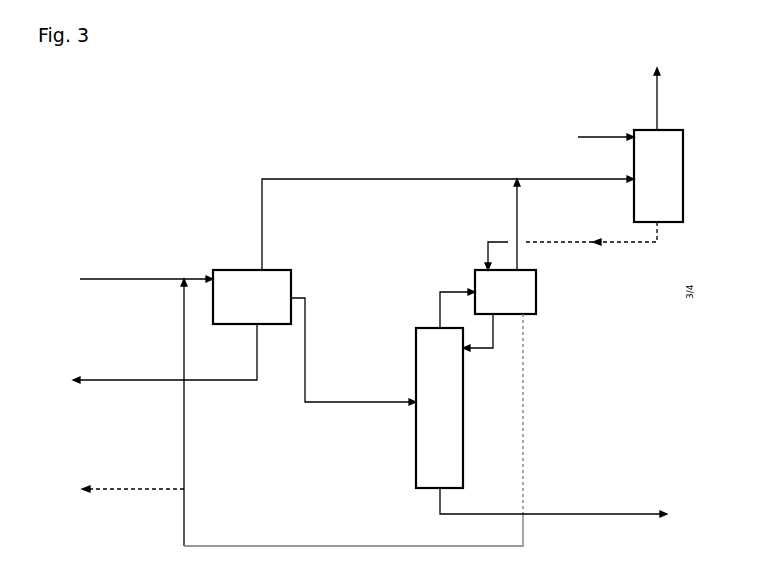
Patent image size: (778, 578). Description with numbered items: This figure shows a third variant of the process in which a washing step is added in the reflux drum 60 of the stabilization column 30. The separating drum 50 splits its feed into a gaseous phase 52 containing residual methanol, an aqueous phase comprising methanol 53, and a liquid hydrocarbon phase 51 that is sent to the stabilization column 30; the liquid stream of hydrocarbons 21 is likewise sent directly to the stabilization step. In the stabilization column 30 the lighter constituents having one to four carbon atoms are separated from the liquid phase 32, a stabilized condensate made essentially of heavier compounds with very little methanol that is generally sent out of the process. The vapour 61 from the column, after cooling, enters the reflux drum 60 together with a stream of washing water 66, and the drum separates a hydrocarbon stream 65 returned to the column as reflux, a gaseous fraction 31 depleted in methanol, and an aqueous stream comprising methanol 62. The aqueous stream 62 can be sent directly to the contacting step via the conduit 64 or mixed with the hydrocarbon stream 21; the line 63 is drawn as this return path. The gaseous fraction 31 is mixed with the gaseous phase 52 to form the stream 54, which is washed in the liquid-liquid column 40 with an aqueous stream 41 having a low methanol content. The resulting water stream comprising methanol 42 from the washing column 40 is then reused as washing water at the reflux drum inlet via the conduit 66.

The liquid stream of hydrocarbons 21 is at (80, 279).
The stabilization column 30 is at (464, 418).
The gaseous fraction obtained from the stabilization step 31 is at (519, 205).
The liquid phase 32 is at (626, 516).
The liquid-liquid column 40 is at (666, 130).
The aqueous stream 41 is at (578, 137).
The water stream comprising methanol 42 is at (657, 232).
The separating drum 50 is at (280, 270).
The liquid hydrocarbon phase 51 is at (368, 402).
The gaseous phase 52 is at (358, 182).
The aqueous phase comprising methanol 53 is at (112, 380).
The stream 54 is at (615, 183).
The reflux drum 60 is at (537, 285).
The vapour 61 is at (440, 302).
The aqueous stream comprising methanol 62 is at (525, 334).
The recycle stream 63 is at (185, 438).
The conduit 64 is at (128, 489).
The hydrocarbon stream 65 is at (493, 350).
The stream of washing water 66 is at (483, 250).